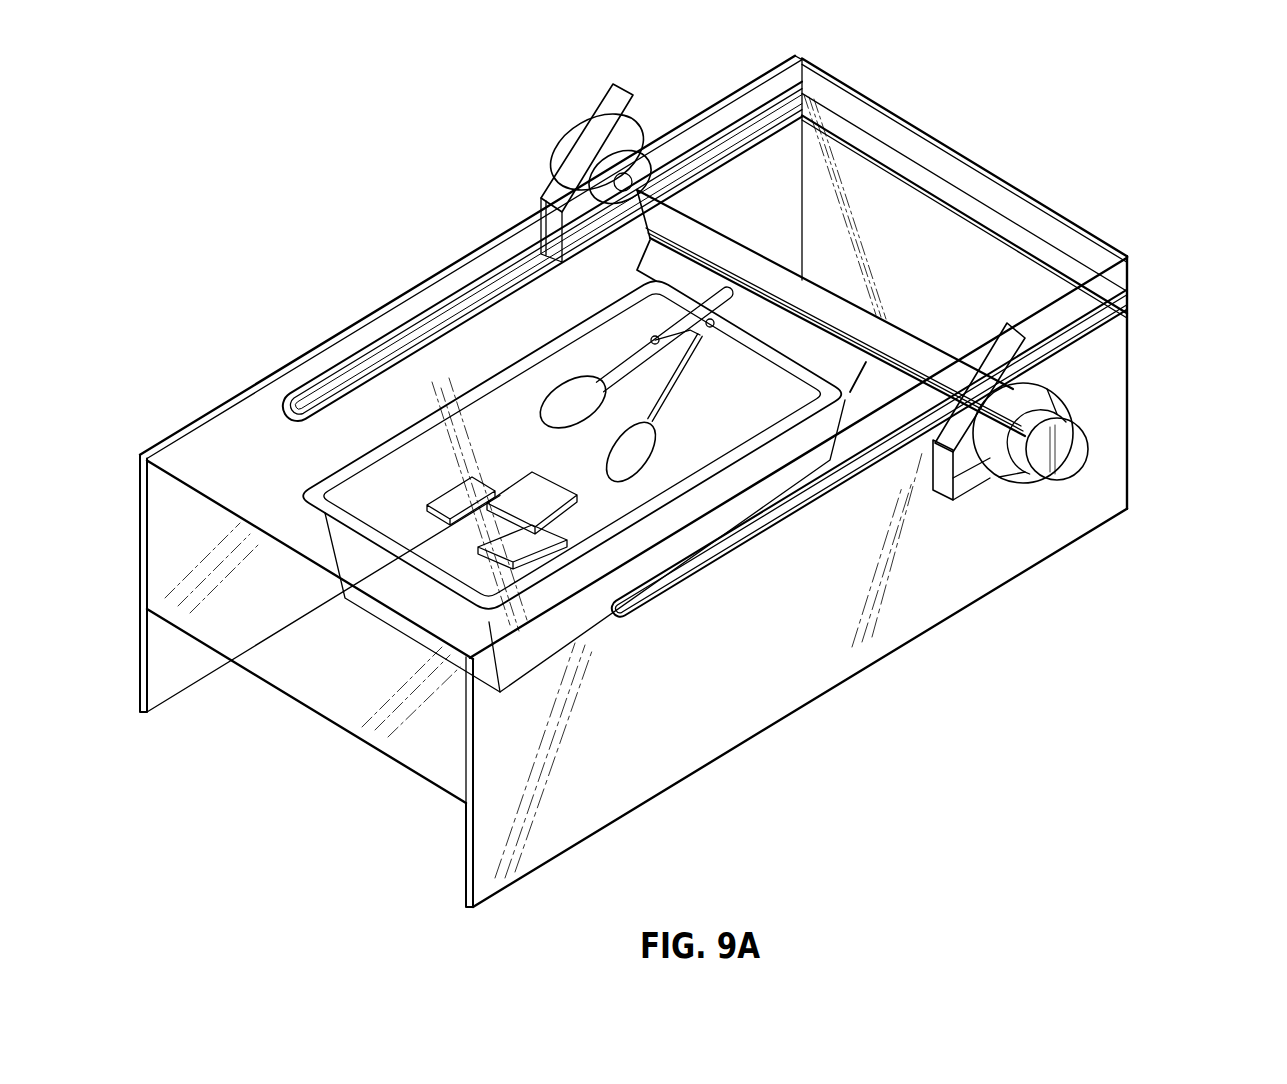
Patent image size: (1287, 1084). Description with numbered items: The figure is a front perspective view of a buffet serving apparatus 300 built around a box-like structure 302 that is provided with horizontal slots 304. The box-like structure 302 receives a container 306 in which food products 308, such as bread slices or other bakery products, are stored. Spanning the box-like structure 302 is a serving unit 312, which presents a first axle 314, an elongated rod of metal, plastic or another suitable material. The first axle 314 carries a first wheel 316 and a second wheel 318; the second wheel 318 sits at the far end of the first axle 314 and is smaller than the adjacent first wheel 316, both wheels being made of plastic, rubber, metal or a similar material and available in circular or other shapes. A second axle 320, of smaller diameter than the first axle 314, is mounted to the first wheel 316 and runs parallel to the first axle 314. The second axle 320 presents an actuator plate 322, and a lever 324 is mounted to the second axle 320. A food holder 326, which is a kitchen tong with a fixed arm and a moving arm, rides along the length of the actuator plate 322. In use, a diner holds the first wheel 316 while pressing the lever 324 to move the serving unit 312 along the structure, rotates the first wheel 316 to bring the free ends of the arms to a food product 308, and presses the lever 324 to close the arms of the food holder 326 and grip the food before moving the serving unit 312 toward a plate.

The buffet serving apparatus 300 is at (1165, 84).
The box-like structure 302 is at (970, 572).
The horizontal slots 304 is at (353, 373).
The container 306 is at (435, 570).
The food products 308 is at (528, 548).
The serving unit 312 is at (893, 343).
The first axle 314 is at (702, 232).
The first wheel 316 is at (1040, 364).
The second wheel 318 is at (1080, 445).
The second axle 320 is at (888, 387).
The actuator plate 322 is at (797, 353).
The lever 324 is at (1020, 483).
The food holder 326 is at (563, 392).